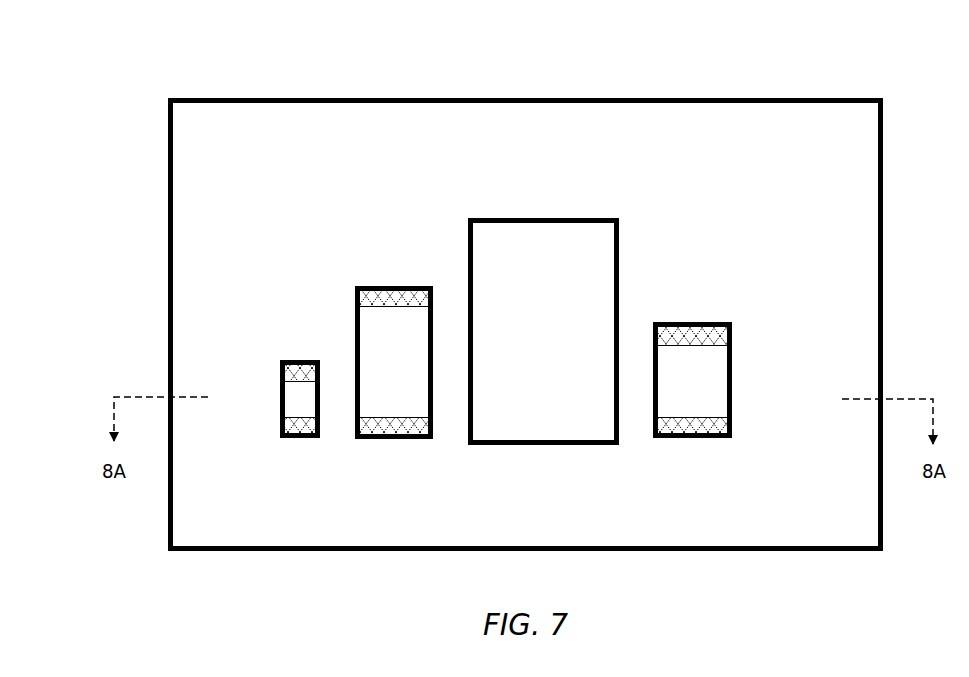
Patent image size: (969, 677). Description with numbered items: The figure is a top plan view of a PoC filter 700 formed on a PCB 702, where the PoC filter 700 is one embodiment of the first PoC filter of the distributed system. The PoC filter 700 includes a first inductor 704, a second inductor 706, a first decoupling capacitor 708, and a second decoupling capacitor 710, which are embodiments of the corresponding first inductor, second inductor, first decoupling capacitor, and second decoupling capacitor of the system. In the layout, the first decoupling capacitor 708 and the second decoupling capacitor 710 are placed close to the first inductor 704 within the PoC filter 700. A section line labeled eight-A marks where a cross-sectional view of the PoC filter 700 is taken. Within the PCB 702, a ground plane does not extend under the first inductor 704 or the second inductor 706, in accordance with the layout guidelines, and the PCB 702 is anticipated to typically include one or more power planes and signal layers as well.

The PoC filter 700 is at (86, 62).
The PCB 702 is at (220, 530).
The first inductor 704 is at (459, 205).
The second inductor 706 is at (678, 314).
The first decoupling capacitor 708 is at (348, 267).
The second decoupling capacitor 710 is at (273, 341).